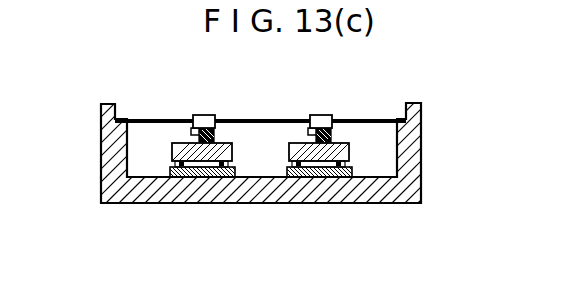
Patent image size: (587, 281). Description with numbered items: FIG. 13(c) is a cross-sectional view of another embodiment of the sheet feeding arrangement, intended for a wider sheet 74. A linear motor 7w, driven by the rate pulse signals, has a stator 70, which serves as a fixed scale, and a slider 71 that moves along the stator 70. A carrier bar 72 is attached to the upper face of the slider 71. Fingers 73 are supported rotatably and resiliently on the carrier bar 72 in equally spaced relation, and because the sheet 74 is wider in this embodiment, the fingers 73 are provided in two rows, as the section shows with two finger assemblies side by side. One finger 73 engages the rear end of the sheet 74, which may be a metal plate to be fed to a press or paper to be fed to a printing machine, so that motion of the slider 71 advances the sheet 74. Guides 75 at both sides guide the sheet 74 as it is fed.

The stator 70 is at (200, 178).
The slider 71 is at (176, 165).
The carrier bar 72 is at (226, 118).
The finger 73 is at (197, 115).
The sheet 74 is at (253, 119).
The guide 75 is at (105, 103).
The linear motor 7w is at (228, 182).